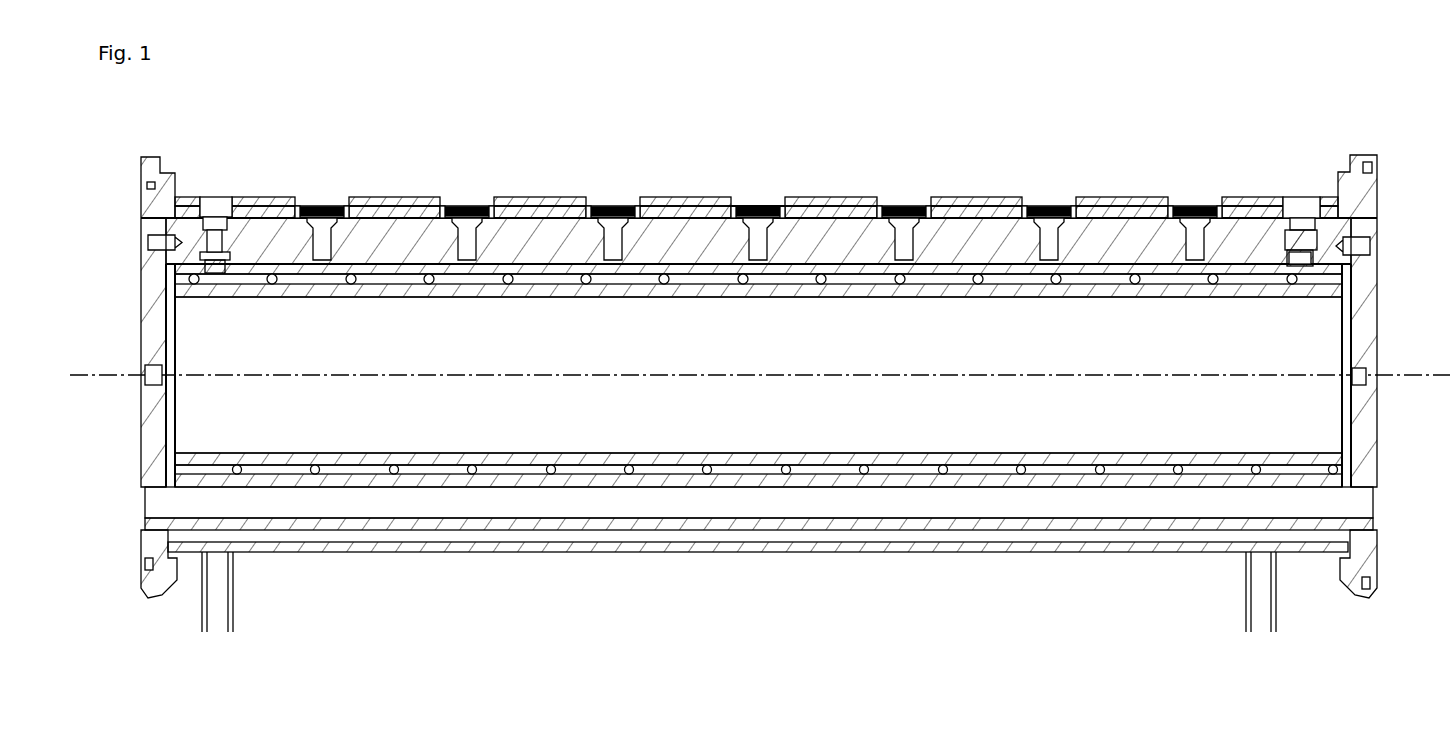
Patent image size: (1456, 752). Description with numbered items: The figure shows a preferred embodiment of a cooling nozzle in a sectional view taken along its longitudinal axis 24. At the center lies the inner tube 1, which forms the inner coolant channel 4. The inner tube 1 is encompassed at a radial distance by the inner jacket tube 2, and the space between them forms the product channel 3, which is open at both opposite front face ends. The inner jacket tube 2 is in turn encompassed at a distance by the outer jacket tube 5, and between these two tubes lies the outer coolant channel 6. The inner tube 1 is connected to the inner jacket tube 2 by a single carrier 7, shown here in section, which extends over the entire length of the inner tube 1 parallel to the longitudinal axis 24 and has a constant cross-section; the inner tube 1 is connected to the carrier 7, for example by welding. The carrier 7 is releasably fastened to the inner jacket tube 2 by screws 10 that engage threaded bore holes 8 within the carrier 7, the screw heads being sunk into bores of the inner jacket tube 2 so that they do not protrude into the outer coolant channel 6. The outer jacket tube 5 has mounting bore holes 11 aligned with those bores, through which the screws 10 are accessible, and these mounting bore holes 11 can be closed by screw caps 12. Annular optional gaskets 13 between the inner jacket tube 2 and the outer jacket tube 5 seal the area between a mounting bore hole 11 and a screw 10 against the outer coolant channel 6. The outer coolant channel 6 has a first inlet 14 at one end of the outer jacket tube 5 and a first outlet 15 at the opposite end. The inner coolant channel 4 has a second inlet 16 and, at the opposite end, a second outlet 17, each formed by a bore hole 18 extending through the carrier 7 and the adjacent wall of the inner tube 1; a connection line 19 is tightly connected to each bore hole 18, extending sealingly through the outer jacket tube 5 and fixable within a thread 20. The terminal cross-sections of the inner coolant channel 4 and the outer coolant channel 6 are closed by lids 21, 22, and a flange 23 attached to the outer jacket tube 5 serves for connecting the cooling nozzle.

The inner tube 1 is at (1252, 292).
The inner jacket tube 2 is at (1133, 227).
The product channel 3 is at (1312, 502).
The inner coolant channel 4 is at (1292, 421).
The outer jacket tube 5 is at (1106, 196).
The outer coolant channel 6 is at (1095, 208).
The carrier 7 is at (990, 244).
The threaded bore holes 8 is at (606, 241).
The screws 10 is at (321, 219).
The mounting bore holes 11 is at (338, 195).
The screw caps 12 is at (753, 195).
The gaskets 13 is at (784, 207).
The first inlet 14 is at (1259, 600).
The first outlet 15 is at (217, 607).
The second inlet 16 is at (215, 263).
The second outlet 17 is at (1305, 257).
The bore hole 18 is at (203, 263).
The connection line 19 is at (1297, 240).
The thread 20 is at (226, 244).
The lid 21 is at (1379, 401).
The lid 22 is at (143, 398).
The flange 23 is at (151, 595).
The longitudinal axis 24 is at (935, 378).